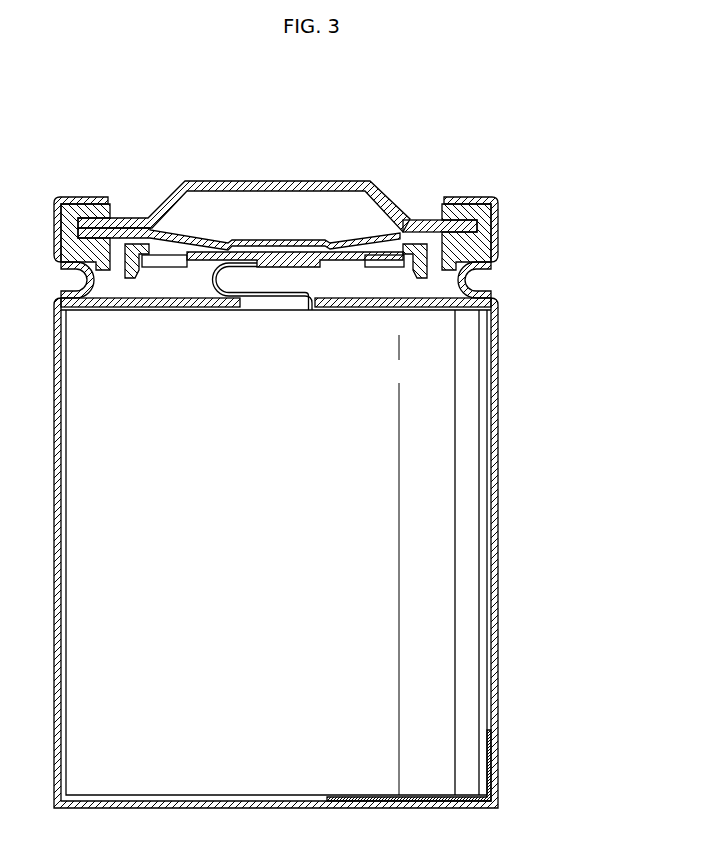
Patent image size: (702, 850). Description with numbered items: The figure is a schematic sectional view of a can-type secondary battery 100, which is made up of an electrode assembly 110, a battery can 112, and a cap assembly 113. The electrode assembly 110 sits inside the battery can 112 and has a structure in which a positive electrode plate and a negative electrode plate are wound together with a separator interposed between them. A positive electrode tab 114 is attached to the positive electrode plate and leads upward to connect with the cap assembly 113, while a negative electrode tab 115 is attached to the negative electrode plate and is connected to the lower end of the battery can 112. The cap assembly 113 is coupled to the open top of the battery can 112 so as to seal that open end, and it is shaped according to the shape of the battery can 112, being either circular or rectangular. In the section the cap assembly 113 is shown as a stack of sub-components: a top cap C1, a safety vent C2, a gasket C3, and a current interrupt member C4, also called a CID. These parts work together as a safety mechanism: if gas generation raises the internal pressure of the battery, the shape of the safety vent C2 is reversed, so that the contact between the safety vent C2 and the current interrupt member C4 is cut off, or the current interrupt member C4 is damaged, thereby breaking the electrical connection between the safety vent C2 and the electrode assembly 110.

The can-type secondary battery 100 is at (514, 125).
The electrode assembly 110 is at (462, 414).
The battery can 112 is at (500, 480).
The cap assembly 113 is at (483, 136).
The positive electrode tab 114 is at (212, 277).
The negative electrode tab 115 is at (493, 757).
The top cap C1 is at (338, 180).
The safety vent C2 is at (358, 238).
The gasket C3 is at (464, 221).
The current interrupt member C4 is at (373, 253).